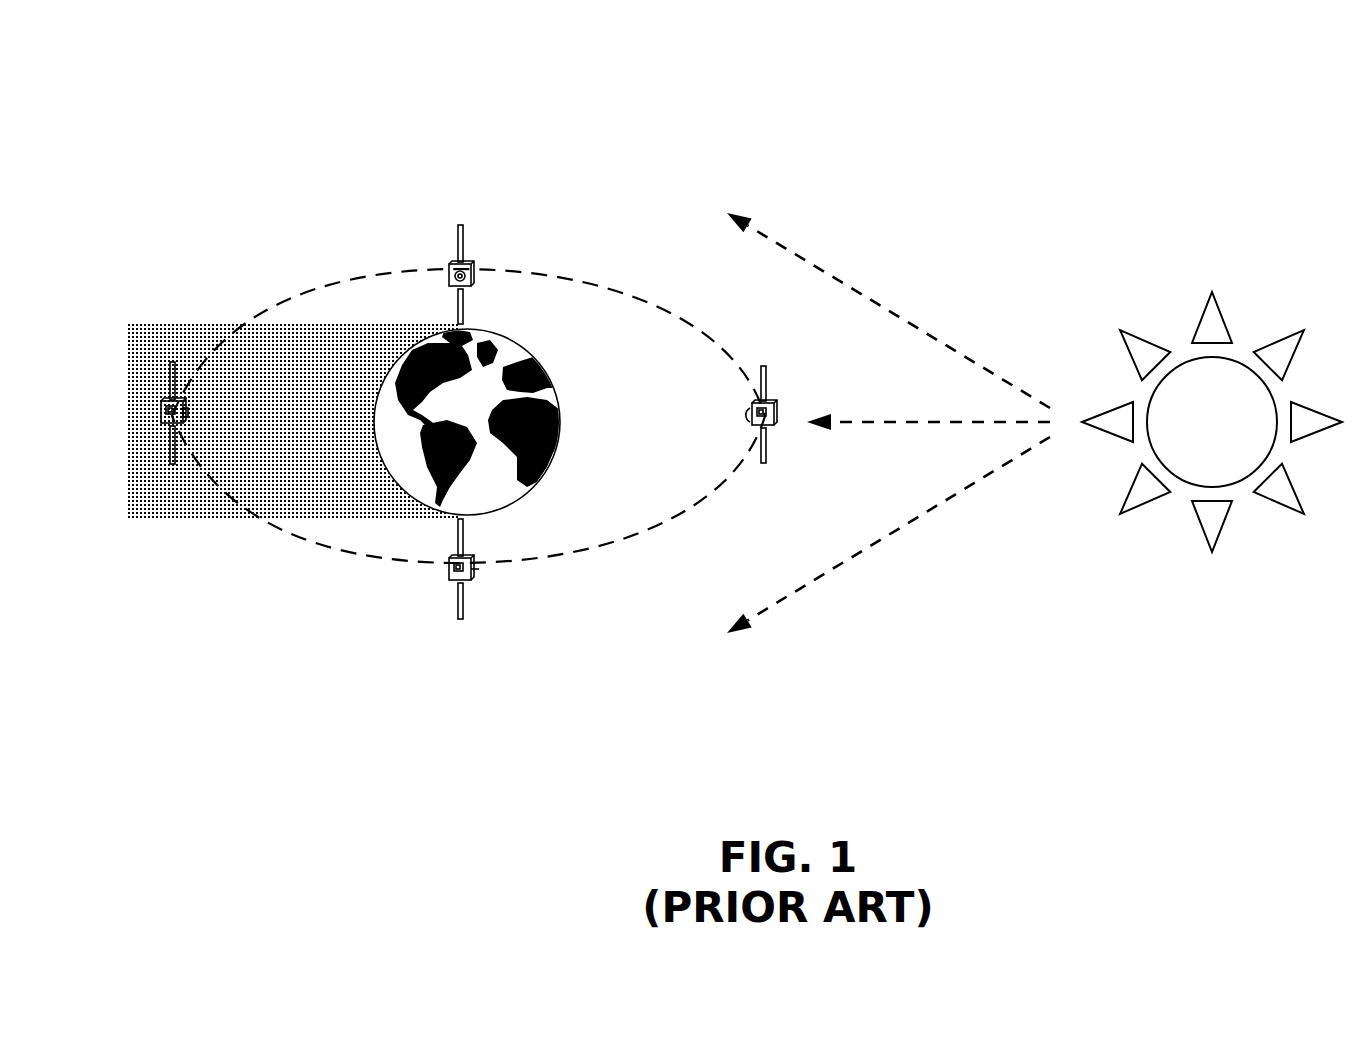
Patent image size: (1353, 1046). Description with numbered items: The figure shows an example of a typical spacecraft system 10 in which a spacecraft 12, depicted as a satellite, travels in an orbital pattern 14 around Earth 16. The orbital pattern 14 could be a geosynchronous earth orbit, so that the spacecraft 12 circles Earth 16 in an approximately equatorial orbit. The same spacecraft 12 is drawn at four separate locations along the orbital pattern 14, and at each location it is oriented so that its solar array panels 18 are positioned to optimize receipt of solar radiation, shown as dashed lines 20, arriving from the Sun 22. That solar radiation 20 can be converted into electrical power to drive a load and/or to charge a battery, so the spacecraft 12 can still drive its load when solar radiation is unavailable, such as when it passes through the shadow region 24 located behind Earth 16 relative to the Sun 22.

The spacecraft system 10 is at (1210, 98).
The spacecraft 12 is at (178, 423).
The orbital pattern 14 is at (590, 283).
The Earth 16 is at (515, 340).
The solar array panels 18 is at (176, 384).
The solar radiation 20 is at (819, 266).
The Sun 22 is at (1170, 305).
The shadow region 24 is at (322, 428).